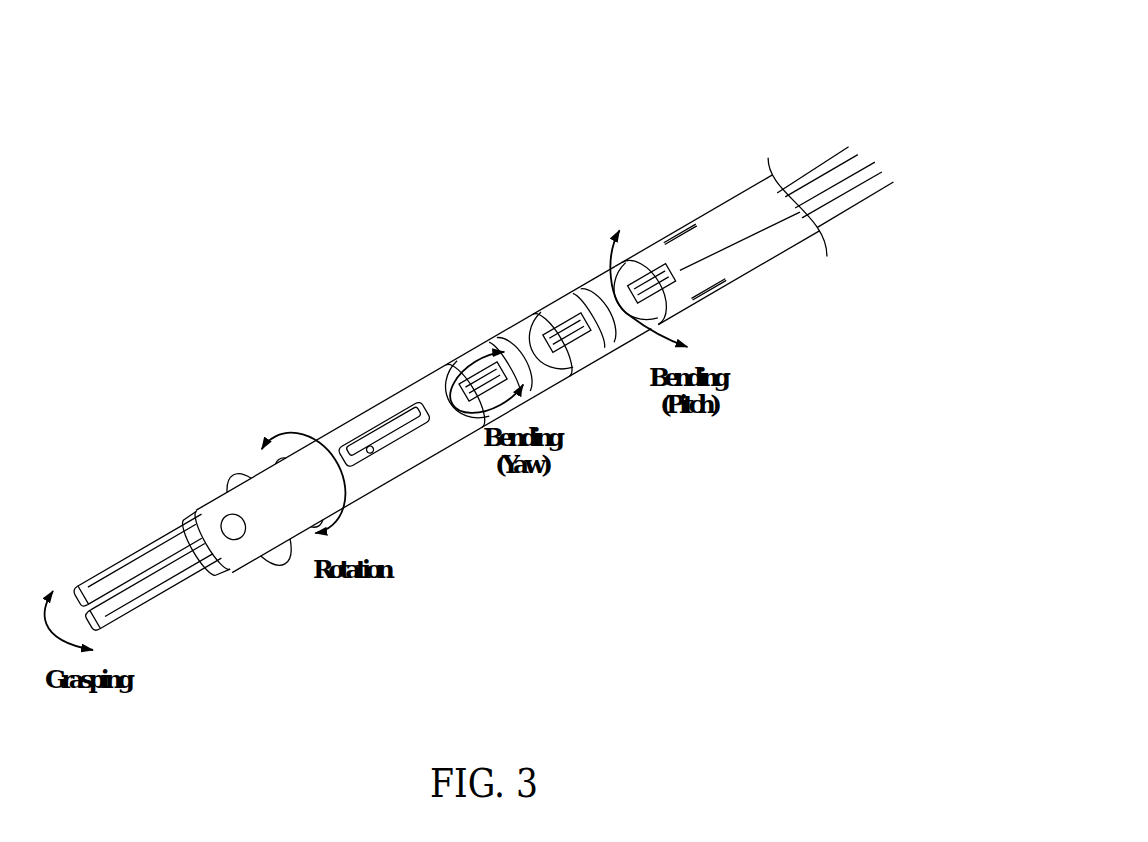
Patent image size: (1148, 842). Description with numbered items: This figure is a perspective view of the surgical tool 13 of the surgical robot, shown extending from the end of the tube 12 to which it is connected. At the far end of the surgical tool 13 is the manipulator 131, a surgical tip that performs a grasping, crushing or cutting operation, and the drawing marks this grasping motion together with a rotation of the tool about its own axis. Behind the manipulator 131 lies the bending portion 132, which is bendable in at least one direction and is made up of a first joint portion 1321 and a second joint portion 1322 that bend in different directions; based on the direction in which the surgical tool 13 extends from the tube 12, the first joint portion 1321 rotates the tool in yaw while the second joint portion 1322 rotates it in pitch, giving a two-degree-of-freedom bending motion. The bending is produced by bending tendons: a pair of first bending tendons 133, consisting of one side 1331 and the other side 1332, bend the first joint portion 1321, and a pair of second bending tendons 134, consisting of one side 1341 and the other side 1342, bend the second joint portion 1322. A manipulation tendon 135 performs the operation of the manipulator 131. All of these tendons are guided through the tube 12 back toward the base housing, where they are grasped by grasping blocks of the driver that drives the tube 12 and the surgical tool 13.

The tube 12 is at (690, 192).
The surgical tool 13 is at (272, 362).
The manipulator 131 is at (133, 558).
The bending portion 132 is at (470, 301).
The first joint portion 1321 is at (468, 380).
The second joint portion 1322 is at (591, 296).
The first bending tendon 133 is at (799, 119).
The one side of the first bending tendon 1331 is at (800, 173).
The other side of the first bending tendon 1332 is at (843, 154).
The second bending tendon 134 is at (874, 249).
The one side of the second bending tendon 1341 is at (833, 192).
The other side of the second bending tendon 1342 is at (878, 186).
The manipulation tendon 135 is at (895, 181).